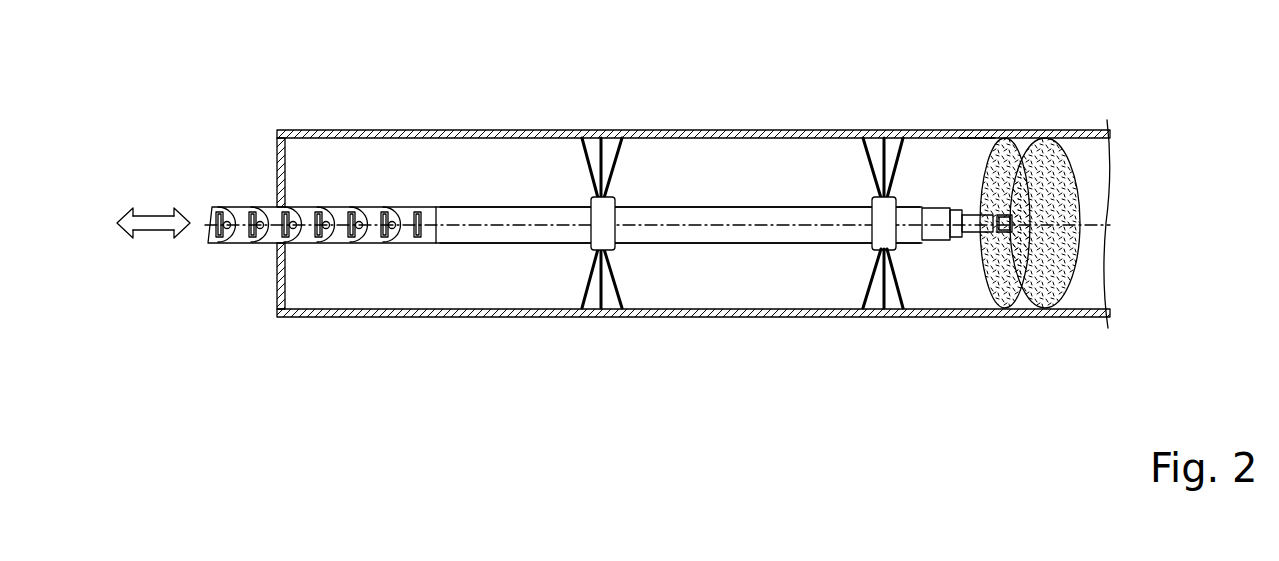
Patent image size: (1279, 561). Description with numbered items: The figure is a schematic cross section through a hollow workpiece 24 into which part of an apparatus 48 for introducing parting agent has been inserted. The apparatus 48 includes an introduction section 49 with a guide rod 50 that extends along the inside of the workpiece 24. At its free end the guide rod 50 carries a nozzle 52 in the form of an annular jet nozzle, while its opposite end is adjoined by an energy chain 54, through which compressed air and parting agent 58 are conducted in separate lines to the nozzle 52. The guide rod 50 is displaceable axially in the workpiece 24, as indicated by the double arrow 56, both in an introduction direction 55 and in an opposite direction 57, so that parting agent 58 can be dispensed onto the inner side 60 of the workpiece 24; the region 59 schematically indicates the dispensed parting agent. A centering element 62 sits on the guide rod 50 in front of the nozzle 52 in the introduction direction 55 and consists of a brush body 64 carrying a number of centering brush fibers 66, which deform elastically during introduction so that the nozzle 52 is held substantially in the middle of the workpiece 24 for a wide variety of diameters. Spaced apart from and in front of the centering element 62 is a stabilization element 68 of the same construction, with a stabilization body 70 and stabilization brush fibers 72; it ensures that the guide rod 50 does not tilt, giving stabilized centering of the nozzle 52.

The hollow workpiece 24 is at (410, 130).
The apparatus for introducing parting agent 48 is at (487, 255).
The introduction section 49 is at (745, 226).
The guide rod 50 is at (680, 244).
The nozzle 52 is at (972, 228).
The energy chain 54 is at (335, 235).
The introduction direction 55 is at (185, 232).
The double arrow 56 is at (155, 217).
The opposite direction 57 is at (123, 230).
The parting agent 58 is at (1050, 173).
The region of dispensed parting agent 59 is at (1043, 297).
The inner side 60 is at (977, 140).
The centering element 62 is at (870, 283).
The brush body 64 is at (870, 198).
The centering brush fibers 66 is at (868, 157).
The stabilization element 68 is at (582, 160).
The stabilization body 70 is at (597, 250).
The stabilization brush fibers 72 is at (617, 153).